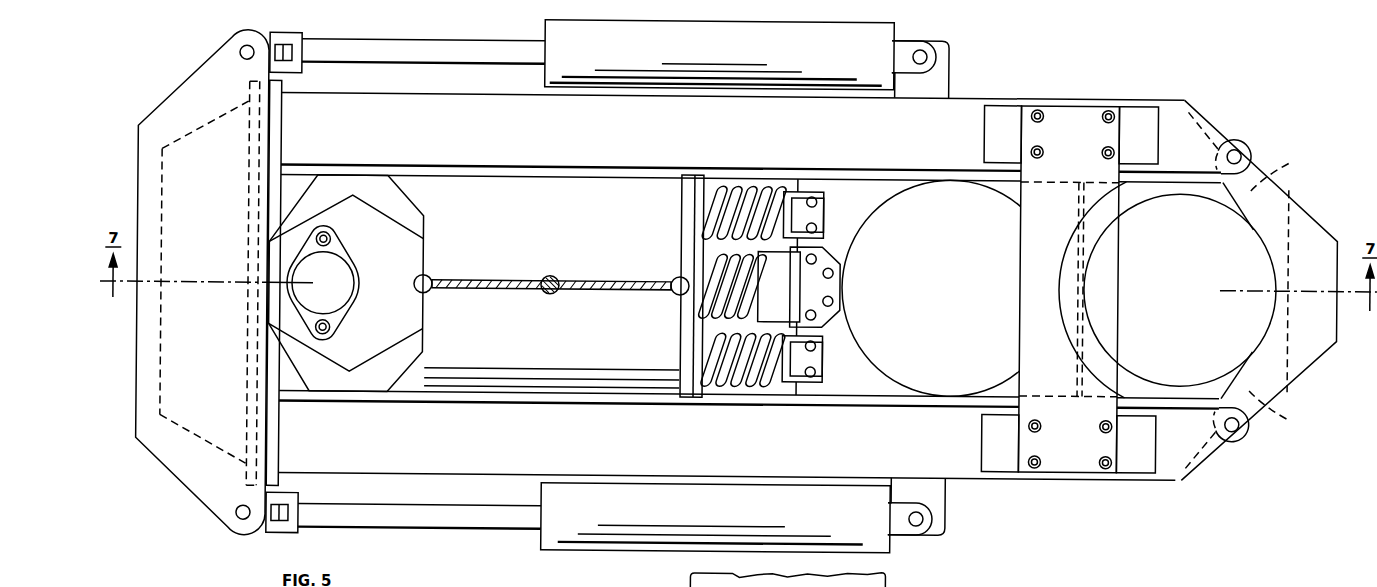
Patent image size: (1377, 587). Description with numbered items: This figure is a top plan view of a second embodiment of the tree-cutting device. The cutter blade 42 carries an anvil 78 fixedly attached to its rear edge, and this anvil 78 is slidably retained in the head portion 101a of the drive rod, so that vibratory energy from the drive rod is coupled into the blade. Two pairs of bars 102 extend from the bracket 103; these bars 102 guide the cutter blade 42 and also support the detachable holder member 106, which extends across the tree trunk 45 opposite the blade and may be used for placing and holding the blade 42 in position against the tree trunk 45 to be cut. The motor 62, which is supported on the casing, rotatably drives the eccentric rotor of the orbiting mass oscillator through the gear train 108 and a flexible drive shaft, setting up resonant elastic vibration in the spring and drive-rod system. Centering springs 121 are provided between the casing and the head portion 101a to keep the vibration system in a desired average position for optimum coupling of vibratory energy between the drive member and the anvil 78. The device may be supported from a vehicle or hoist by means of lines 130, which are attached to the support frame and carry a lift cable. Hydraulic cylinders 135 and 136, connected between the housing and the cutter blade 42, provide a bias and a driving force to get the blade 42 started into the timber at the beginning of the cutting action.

The bars 102 is at (965, 106).
The bracket 103 is at (197, 88).
The detachable holder member 106 is at (1303, 345).
The hydraulic cylinder 135 is at (730, 34).
The hydraulic cylinder 136 is at (541, 540).
The gear train 108 is at (428, 317).
The motor 62 is at (345, 273).
The lines 130 is at (513, 275).
The centering springs 121 is at (745, 178).
The head portion 101a is at (788, 296).
The anvil 78 is at (826, 258).
The cutter blade 42 is at (931, 288).
The tree trunk 45 is at (1232, 213).